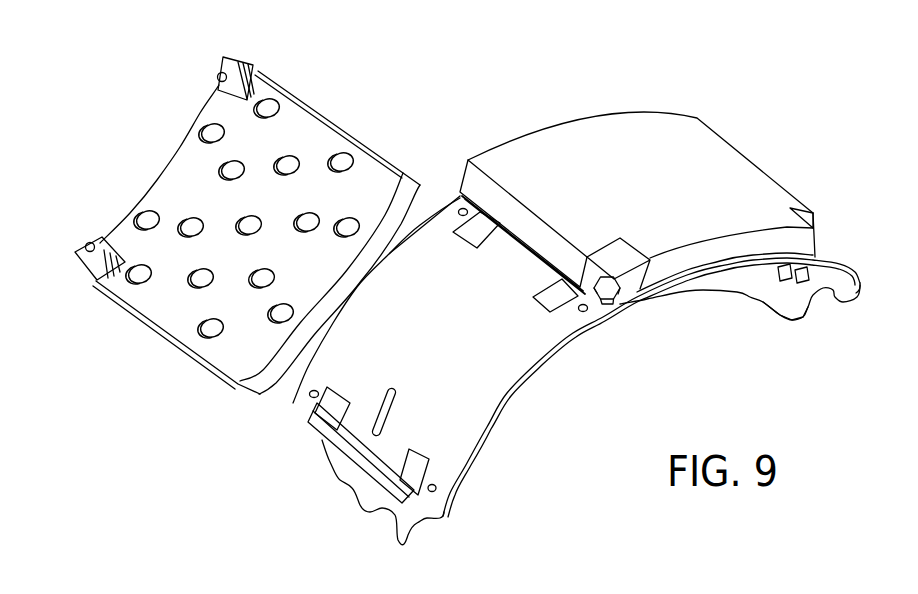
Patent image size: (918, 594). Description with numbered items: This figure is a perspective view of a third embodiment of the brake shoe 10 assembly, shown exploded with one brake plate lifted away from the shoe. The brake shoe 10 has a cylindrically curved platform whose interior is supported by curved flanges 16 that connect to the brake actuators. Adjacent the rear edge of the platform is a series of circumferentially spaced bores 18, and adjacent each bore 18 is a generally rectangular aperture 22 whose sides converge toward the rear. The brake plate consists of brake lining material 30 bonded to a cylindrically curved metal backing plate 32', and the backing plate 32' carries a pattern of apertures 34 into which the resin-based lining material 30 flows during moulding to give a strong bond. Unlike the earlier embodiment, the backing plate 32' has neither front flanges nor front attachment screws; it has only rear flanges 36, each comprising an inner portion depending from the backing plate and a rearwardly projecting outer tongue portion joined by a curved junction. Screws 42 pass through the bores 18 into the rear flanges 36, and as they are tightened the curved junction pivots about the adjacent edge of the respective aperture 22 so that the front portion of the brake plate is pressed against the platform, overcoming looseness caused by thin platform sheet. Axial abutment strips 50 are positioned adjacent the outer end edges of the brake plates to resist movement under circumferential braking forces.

The brake shoe 10 is at (801, 320).
The curved flanges 16 is at (755, 288).
The first circumferentially spaced bores 18 is at (460, 200).
The aperture 22 is at (563, 303).
The brake lining material 30 is at (650, 131).
The backing plate 32' is at (476, 292).
The apertures 34 is at (132, 284).
The rear flanges 36 is at (220, 70).
The screws 42 is at (243, 67).
The strips 50 is at (358, 458).